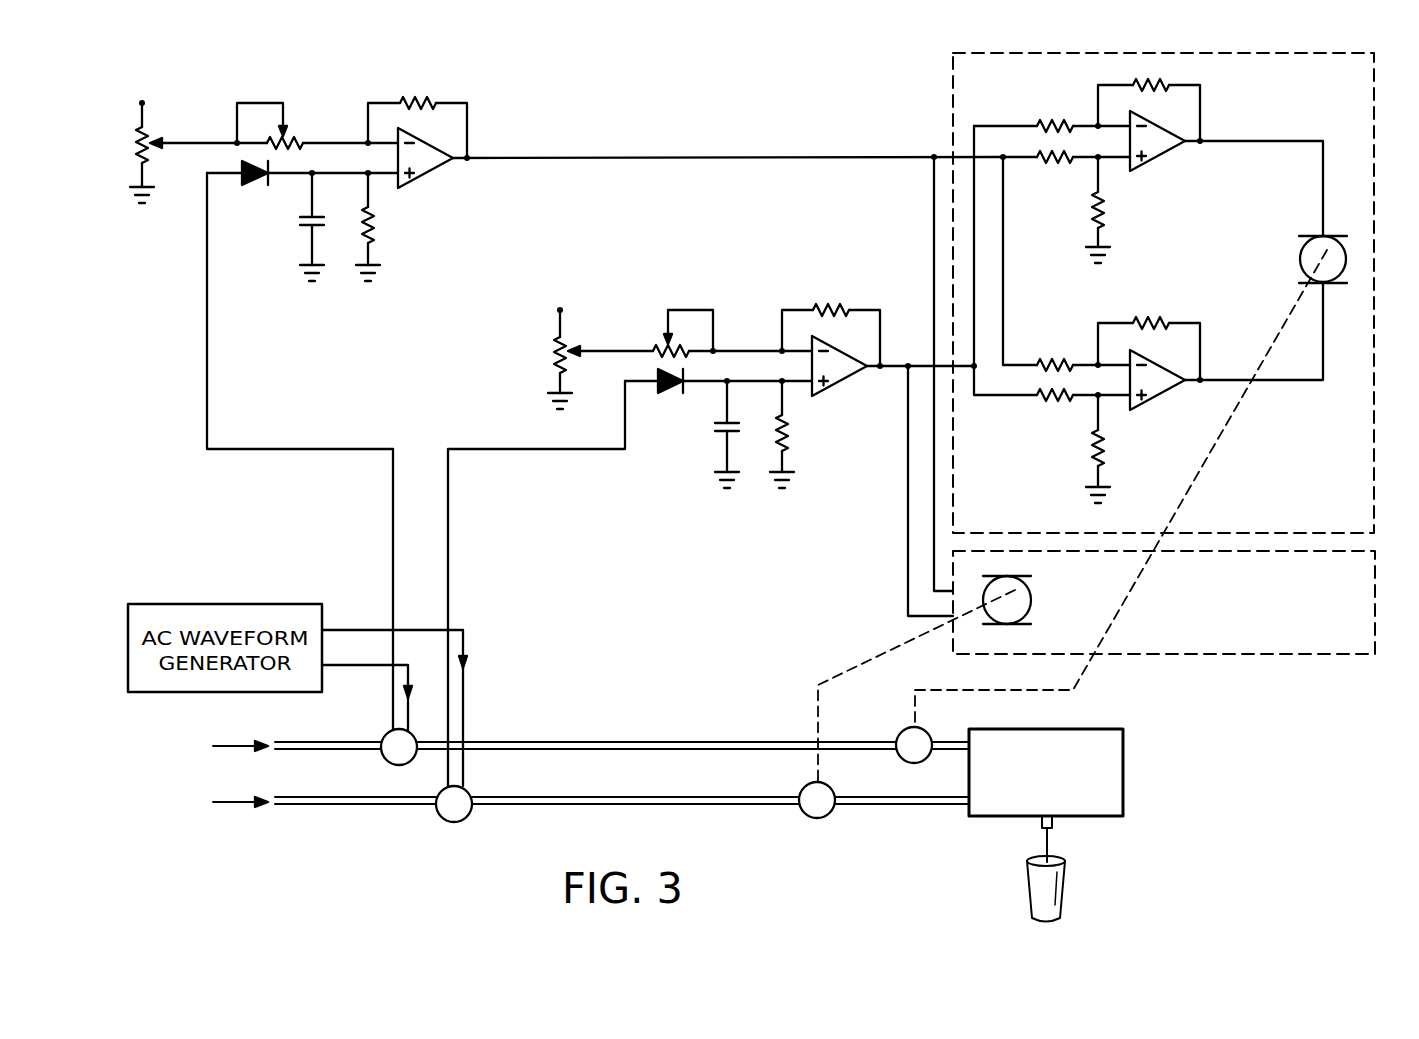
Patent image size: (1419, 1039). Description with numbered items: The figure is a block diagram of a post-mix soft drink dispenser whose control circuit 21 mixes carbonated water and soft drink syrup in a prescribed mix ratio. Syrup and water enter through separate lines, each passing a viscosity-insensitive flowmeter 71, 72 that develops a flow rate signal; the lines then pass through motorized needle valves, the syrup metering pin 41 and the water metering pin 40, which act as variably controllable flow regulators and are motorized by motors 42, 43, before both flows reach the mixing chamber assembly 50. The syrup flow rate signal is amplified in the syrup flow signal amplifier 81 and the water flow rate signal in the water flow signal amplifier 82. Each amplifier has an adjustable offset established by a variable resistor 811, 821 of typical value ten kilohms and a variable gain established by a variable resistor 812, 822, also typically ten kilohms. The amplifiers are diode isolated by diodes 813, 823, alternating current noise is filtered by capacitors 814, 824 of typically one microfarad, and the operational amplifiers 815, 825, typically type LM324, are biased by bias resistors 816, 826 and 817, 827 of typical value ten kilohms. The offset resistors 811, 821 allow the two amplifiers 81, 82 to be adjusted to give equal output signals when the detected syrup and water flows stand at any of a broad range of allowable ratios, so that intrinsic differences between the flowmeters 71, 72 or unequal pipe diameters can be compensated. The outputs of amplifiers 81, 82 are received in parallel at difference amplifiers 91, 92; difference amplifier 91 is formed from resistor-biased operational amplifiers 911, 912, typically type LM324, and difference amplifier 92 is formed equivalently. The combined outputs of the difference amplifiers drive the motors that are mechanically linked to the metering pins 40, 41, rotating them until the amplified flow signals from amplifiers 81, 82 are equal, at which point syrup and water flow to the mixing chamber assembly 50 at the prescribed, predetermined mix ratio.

The control circuit 21 is at (677, 808).
The water metering pin 40 is at (808, 818).
The syrup metering pin 41 is at (903, 733).
The motor 42 is at (1302, 247).
The motor 43 is at (1032, 597).
The mixing chamber assembly 50 is at (1033, 727).
The viscosity-insensitive flowmeter 71 is at (380, 766).
The viscosity-insensitive flowmeter 72 is at (440, 818).
The syrup flow signal amplifier 81 is at (536, 394).
The variable resistor 811 is at (143, 134).
The variable resistor 812 is at (293, 142).
The diode 813 is at (254, 182).
The capacitor 814 is at (300, 234).
The operational amplifier 815 is at (443, 167).
The bias resistor 816 is at (408, 95).
The bias resistor 817 is at (381, 228).
The water flow signal amplifier 82 is at (711, 524).
The variable resistor 821 is at (563, 343).
The variable resistor 822 is at (655, 349).
The diode 823 is at (676, 392).
The capacitor 824 is at (718, 436).
The operational amplifier 825 is at (845, 360).
The bias resistor 826 is at (828, 303).
The bias resistor 827 is at (793, 434).
The difference amplifier 91 is at (1182, 293).
The operational amplifier 911 is at (1163, 157).
The operational amplifier 912 is at (1170, 390).
The difference amplifier 92 is at (1184, 602).